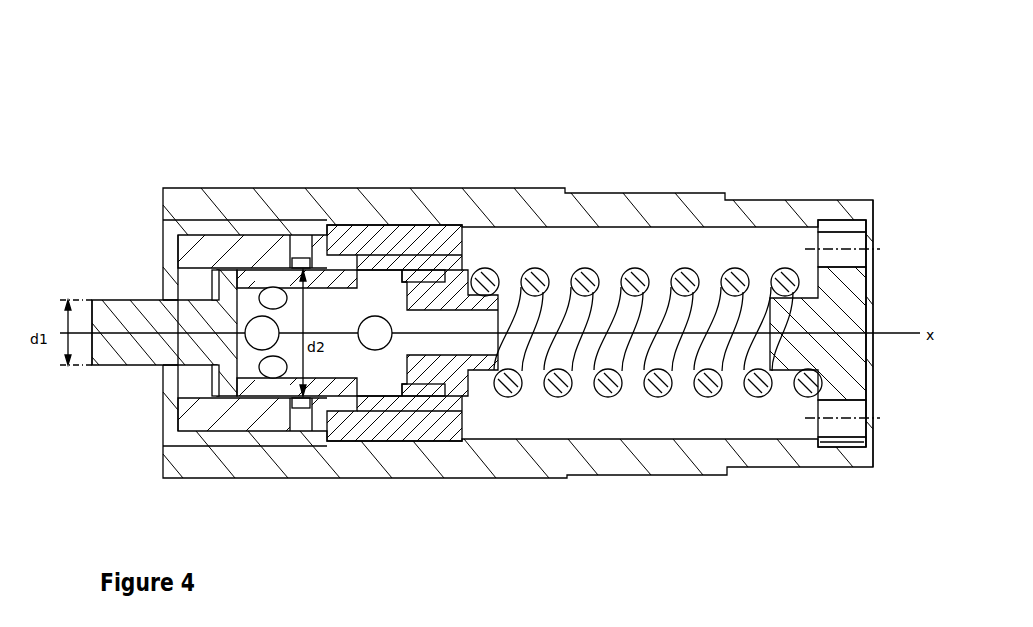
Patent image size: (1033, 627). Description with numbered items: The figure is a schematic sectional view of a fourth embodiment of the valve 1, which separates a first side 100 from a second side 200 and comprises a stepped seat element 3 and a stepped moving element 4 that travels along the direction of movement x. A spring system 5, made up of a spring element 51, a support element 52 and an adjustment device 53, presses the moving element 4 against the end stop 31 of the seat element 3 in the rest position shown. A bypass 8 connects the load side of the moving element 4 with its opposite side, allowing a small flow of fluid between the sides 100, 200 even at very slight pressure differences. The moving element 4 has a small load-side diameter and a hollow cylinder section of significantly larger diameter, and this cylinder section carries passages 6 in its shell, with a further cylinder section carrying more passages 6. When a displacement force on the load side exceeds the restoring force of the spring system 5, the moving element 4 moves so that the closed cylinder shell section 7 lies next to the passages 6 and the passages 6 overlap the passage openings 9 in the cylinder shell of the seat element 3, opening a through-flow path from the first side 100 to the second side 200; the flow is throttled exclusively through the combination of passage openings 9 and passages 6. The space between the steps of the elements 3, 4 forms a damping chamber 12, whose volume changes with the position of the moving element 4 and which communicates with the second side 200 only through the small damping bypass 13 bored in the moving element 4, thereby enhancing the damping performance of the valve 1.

The valve 1 is at (728, 130).
The first side 100 is at (487, 333).
The second side 200 is at (858, 397).
The seat element 3 is at (446, 236).
The moving element 4 is at (113, 358).
The spring system 5 is at (605, 396).
The passages 6 is at (258, 318).
The closed cylinder shell section 7 is at (259, 408).
The bypass 8 is at (91, 347).
The passage openings 9 is at (303, 262).
The damping chamber 12 is at (167, 478).
The damping bypass 13 is at (212, 302).
The end stop 31 is at (214, 294).
The spring element 51 is at (666, 393).
The support element 52 is at (875, 425).
The adjustment device 53 is at (834, 448).